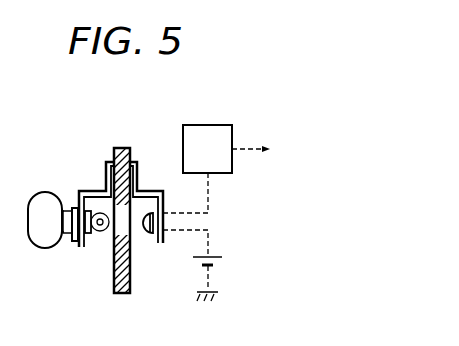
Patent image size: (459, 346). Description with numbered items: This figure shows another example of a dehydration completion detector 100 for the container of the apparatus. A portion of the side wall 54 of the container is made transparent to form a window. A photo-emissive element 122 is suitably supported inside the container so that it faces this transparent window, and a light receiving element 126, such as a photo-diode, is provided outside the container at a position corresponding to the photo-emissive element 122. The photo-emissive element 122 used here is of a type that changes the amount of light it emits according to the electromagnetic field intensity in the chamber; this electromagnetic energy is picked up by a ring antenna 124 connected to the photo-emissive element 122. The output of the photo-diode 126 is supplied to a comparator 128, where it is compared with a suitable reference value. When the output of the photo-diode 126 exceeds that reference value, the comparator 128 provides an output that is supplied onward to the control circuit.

The sensor switch assembly 100 is at (170, 288).
The side wall 54 is at (121, 146).
The photo-emissive element 122 is at (69, 207).
The ring antenna 124 is at (45, 249).
The light receiving element 126 is at (152, 236).
The comparator 128 is at (205, 124).